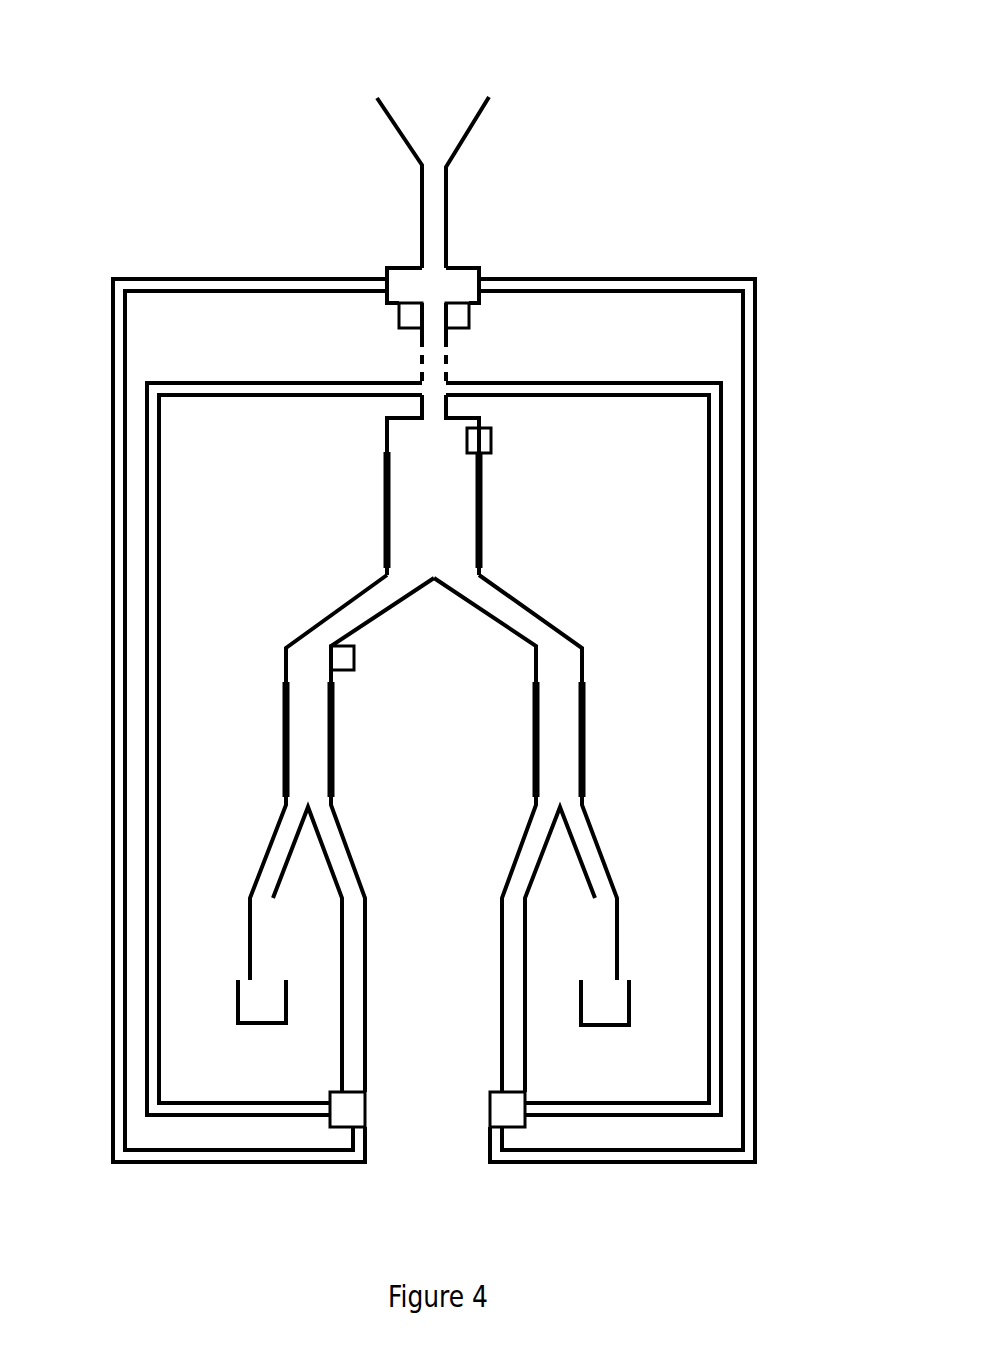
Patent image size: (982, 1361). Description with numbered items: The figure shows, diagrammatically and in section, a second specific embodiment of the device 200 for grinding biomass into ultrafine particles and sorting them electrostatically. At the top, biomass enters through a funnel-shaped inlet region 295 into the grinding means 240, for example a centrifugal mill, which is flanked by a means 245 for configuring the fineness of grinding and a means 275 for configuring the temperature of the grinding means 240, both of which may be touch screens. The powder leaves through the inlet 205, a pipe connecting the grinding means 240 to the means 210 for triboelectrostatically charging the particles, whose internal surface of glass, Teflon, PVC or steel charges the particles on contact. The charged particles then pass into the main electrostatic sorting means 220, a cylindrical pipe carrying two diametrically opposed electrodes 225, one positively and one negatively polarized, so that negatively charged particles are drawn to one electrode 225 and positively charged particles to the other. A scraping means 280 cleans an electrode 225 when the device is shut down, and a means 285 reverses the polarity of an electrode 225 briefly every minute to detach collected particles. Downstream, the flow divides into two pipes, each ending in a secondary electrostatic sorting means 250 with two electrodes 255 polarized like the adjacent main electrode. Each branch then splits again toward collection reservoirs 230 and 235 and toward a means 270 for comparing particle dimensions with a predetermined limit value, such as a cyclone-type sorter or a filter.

The device 200 is at (423, 97).
The inlet funnel 295 is at (410, 120).
The grinding means 240 is at (458, 282).
The temperature configuring means 275 is at (410, 312).
The grinding fineness configuring means 245 is at (457, 315).
The triboelectrostatic charging means 210 is at (417, 340).
The inlet 205 is at (452, 338).
The main electrostatic sorting means 220 is at (405, 478).
The scraping means 280 is at (480, 440).
The electrodes 225 is at (482, 510).
The secondary electrostatic sorting means 250 is at (556, 732).
The polarity reversing means 285 is at (340, 656).
The electrodes 255 is at (282, 703).
The collection reservoir 230 is at (250, 1002).
The collection reservoir 235 is at (617, 1001).
The comparing means 270 is at (345, 1105).